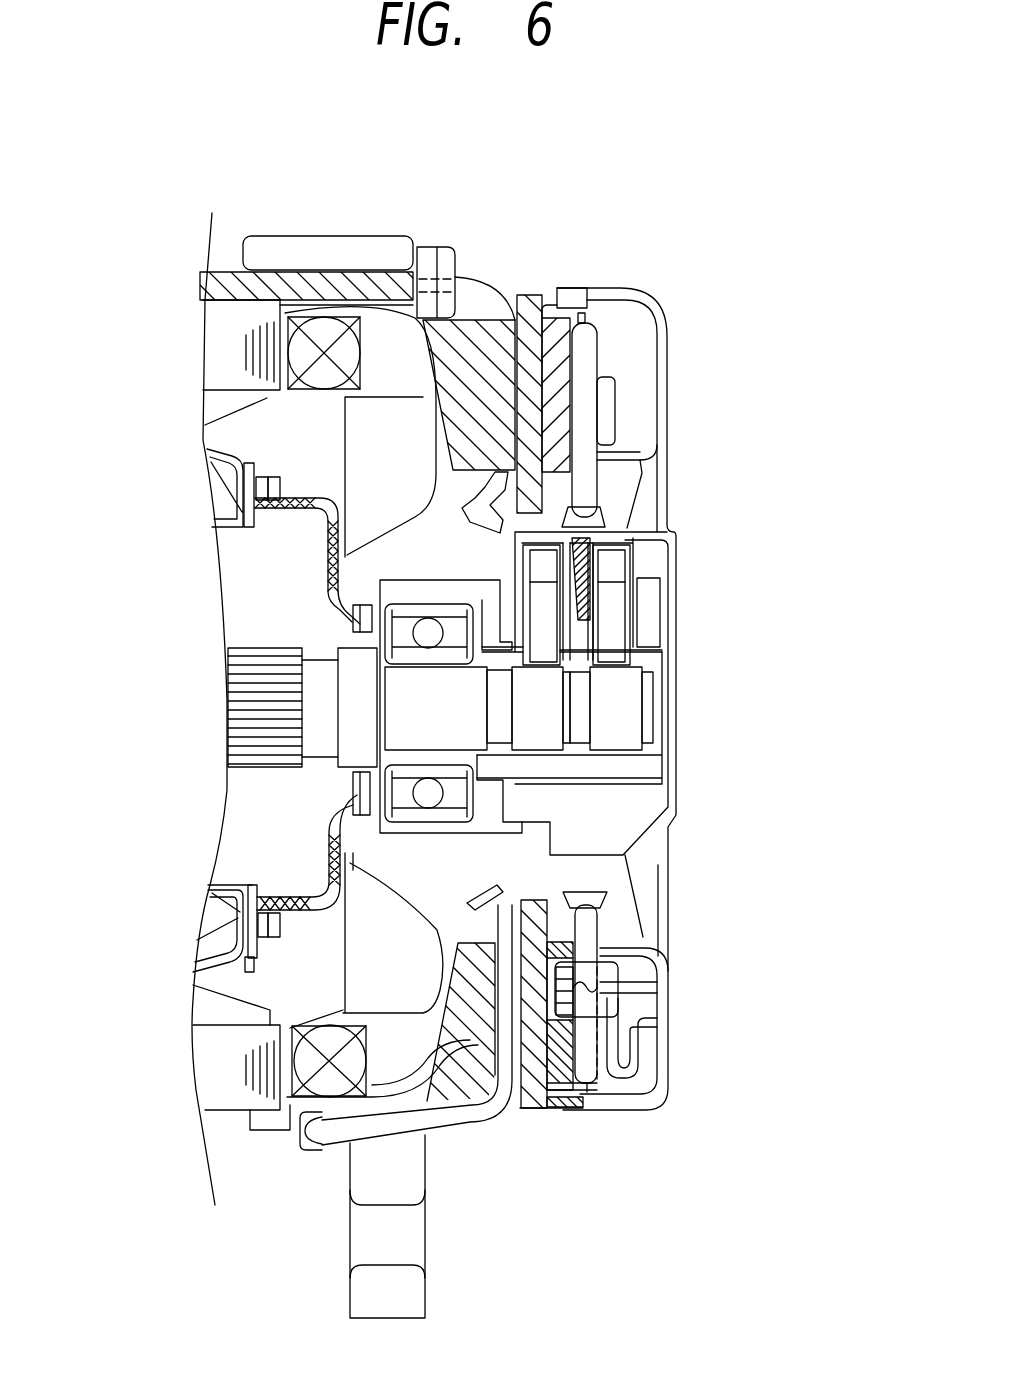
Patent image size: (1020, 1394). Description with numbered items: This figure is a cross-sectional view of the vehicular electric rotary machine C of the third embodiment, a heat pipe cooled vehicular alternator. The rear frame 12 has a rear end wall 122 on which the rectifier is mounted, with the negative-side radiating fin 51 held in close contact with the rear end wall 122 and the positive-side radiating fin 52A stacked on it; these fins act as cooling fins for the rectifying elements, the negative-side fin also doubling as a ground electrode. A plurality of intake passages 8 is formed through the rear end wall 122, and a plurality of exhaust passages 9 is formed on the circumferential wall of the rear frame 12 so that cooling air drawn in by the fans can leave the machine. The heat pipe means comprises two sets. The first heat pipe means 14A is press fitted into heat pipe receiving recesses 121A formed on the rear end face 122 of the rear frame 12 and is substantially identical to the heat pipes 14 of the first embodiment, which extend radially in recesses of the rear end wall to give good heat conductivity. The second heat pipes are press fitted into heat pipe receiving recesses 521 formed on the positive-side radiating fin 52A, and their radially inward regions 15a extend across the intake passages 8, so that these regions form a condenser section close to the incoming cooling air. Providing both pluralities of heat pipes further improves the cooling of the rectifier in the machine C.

The intake passages 8 is at (443, 870).
The exhaust passages 9 is at (357, 1108).
The rear frame 12 is at (464, 1077).
The heat pipes 14 is at (470, 285).
The first heat pipe means 14A is at (445, 1120).
The radially inward regions 15a is at (587, 492).
The negative-side radiating fin 51 is at (537, 1088).
The positive-side radiating fin 52A is at (597, 362).
The heat pipe receiving recesses 121A is at (508, 1123).
The rear end wall 122 is at (563, 363).
The heat pipe receiving recesses 521 is at (600, 388).
The electric rotary machine C is at (664, 280).